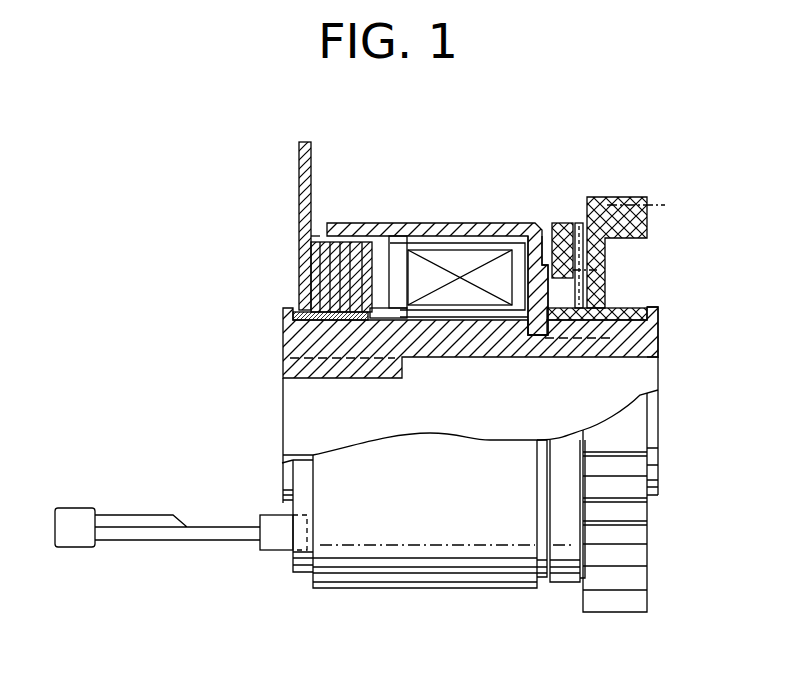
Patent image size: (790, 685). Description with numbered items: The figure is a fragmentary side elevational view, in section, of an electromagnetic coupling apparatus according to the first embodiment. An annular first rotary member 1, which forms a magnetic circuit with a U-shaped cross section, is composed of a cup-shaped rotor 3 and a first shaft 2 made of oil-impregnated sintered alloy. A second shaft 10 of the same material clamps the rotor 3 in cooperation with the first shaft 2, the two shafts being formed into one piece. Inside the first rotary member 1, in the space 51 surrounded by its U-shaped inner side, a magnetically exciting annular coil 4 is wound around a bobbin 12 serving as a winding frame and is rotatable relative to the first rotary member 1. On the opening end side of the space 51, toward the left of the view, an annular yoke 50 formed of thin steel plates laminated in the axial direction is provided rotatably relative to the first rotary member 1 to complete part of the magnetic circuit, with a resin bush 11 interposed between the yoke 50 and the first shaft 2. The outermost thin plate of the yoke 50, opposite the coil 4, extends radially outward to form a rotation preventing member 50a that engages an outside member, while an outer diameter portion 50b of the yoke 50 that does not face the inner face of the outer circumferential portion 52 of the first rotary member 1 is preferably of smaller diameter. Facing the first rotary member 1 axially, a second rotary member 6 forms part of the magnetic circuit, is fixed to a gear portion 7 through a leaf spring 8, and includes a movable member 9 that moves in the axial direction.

The first rotary member 1 is at (313, 340).
The first shaft 2 is at (293, 332).
The rotor 3 is at (387, 223).
The magnetically exciting coil 4 is at (460, 263).
The second rotary member 6 is at (602, 307).
The gear portion 7 is at (600, 200).
The leaf spring 8 is at (576, 227).
The movable member 9 is at (563, 223).
The second shaft 10 is at (620, 332).
The resin bush 11 is at (297, 307).
The bobbin 12 is at (398, 255).
The yoke 50 is at (300, 255).
The rotation preventing member 50a is at (305, 165).
The outer diameter portion 50b is at (320, 233).
The space 51 is at (485, 242).
The outer circumferential portion 52 is at (440, 223).